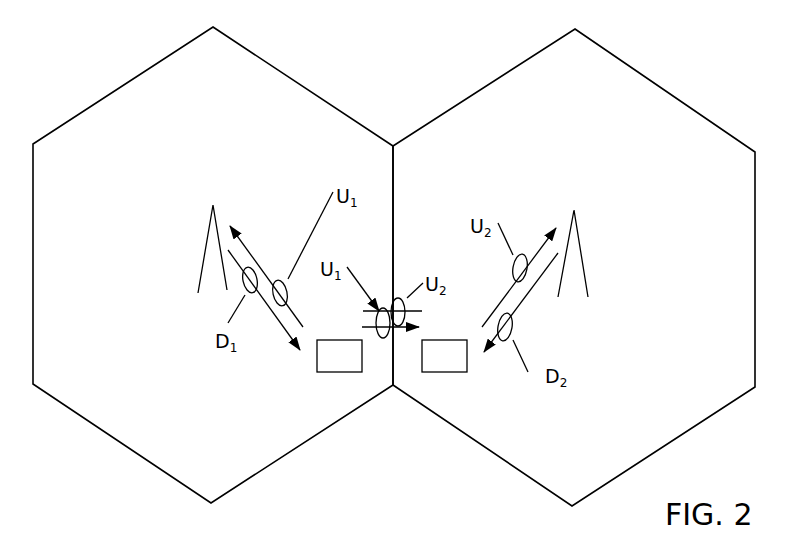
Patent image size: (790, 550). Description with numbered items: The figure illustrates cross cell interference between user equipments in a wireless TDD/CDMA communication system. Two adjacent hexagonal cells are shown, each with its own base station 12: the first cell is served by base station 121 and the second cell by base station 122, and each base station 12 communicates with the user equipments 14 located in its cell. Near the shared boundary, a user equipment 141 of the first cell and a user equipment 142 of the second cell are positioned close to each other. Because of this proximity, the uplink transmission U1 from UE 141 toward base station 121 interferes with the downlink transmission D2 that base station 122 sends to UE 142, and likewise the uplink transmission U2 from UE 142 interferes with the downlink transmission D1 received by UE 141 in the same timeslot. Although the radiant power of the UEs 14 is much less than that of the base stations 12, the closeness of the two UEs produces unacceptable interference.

The base station 12 is at (403, 251).
The base station 121 is at (197, 249).
The base station 122 is at (598, 253).
The user equipment 14 is at (394, 371).
The user equipment 141 is at (341, 371).
The user equipment 142 is at (447, 371).